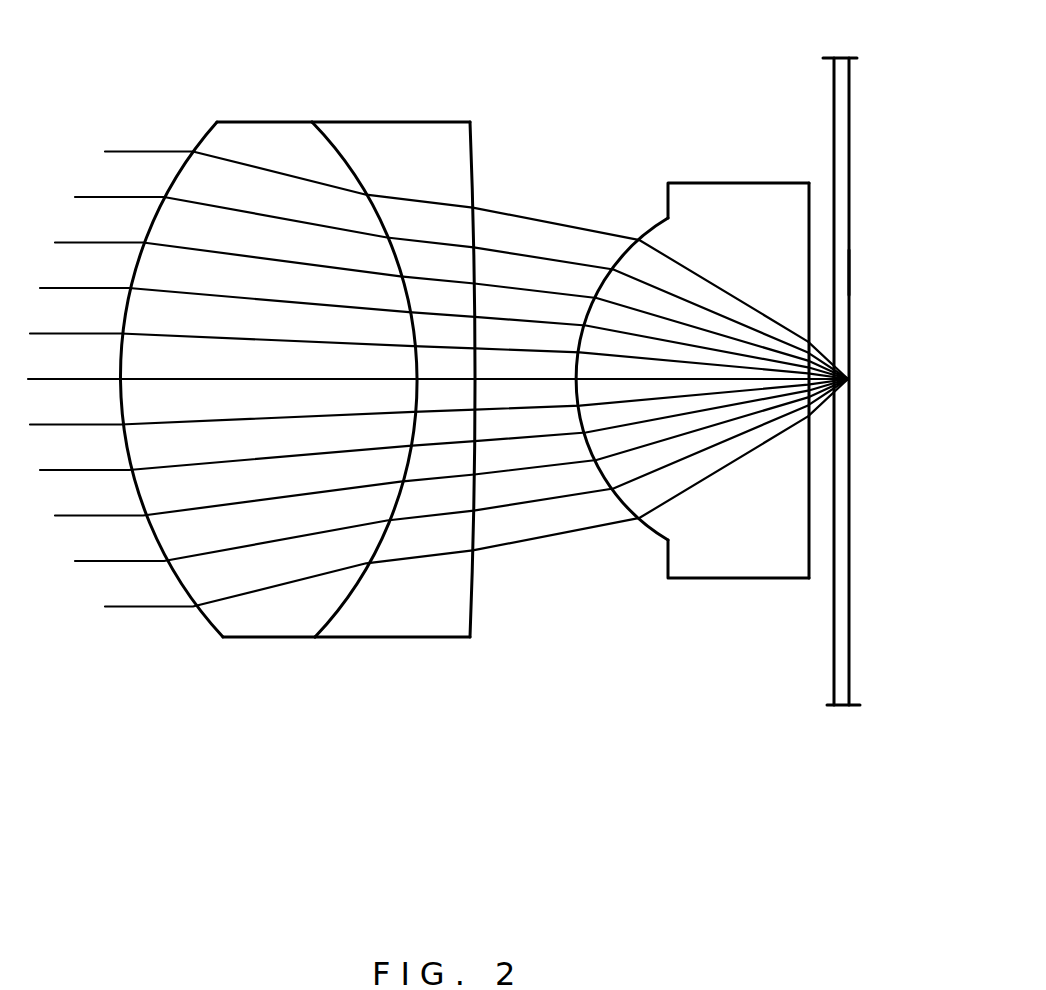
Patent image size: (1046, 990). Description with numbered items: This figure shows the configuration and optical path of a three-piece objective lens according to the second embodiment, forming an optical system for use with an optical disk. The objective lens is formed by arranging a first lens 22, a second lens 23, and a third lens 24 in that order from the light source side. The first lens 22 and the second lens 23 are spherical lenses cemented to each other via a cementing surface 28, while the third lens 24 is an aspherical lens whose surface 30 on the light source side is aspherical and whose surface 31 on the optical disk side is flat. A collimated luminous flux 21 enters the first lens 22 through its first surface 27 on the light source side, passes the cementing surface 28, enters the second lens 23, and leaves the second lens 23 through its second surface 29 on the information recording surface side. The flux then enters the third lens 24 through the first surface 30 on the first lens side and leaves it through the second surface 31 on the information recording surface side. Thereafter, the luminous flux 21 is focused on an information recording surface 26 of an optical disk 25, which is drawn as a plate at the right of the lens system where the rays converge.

The collimated luminous flux 21 is at (142, 152).
The first lens 22 is at (268, 321).
The second lens 23 is at (415, 321).
The third lens 24 is at (699, 314).
The optical disk 25 is at (843, 143).
The information recording surface 26 is at (848, 292).
The first surface 27 is at (207, 135).
The cementing surface 28 is at (343, 160).
The second surface 29 is at (472, 160).
The first surface 30 is at (650, 215).
The second surface 31 is at (815, 205).